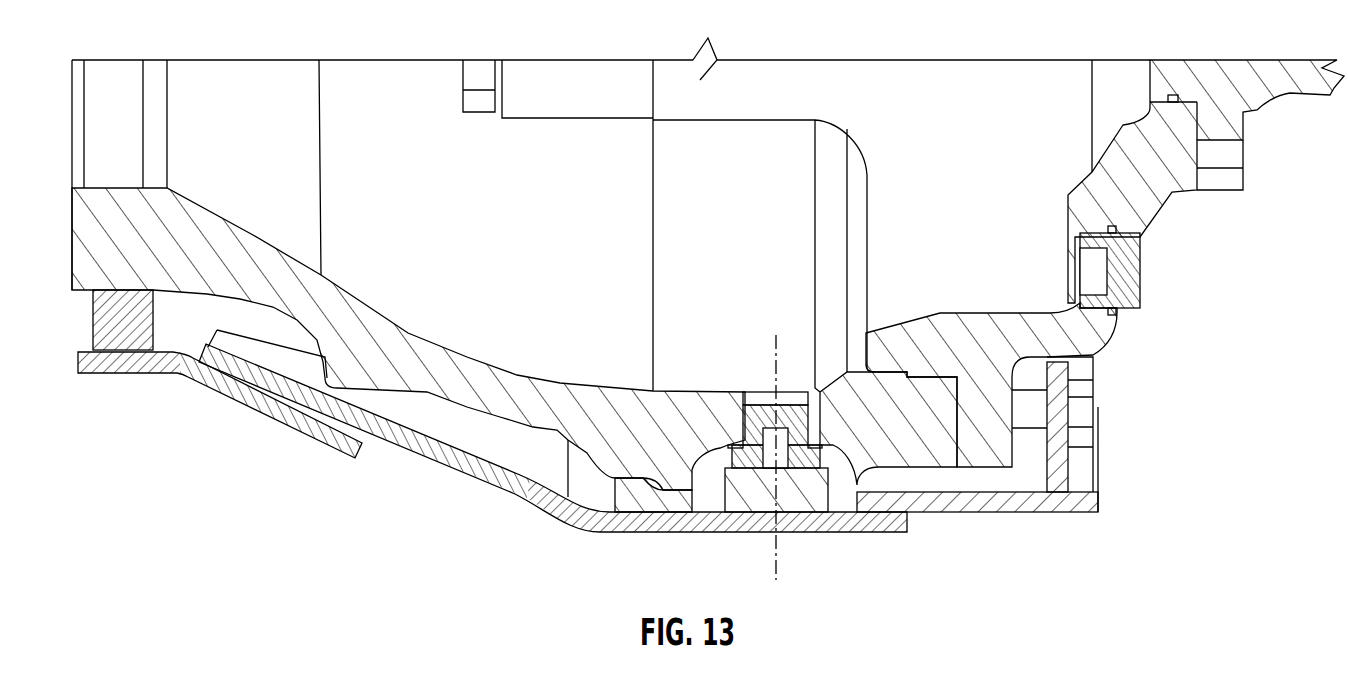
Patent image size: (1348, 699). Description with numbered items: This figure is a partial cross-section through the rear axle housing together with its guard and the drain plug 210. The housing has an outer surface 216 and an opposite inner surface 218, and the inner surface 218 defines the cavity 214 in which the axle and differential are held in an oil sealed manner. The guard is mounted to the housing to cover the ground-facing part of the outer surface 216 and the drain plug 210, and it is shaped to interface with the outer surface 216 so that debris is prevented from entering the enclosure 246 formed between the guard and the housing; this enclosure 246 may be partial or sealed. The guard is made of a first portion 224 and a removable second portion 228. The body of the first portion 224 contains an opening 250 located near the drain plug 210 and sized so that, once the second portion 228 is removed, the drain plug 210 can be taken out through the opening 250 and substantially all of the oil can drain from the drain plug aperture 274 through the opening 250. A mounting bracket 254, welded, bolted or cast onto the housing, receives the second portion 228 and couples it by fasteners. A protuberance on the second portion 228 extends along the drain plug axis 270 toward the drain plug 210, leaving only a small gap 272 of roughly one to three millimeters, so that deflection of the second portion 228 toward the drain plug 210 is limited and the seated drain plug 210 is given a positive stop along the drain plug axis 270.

The drain plug 210 is at (763, 405).
The cavity 214 is at (1040, 85).
The outer surface 216 is at (238, 305).
The inner surface 218 is at (292, 252).
The first portion 224 is at (1072, 513).
The removable second portion 228 is at (473, 484).
The enclosure 246 is at (538, 463).
The opening 250 is at (863, 500).
The mounting bracket 254 is at (105, 332).
The drain plug axis 270 is at (777, 543).
The gap 272 is at (830, 468).
The drain plug aperture 274 is at (739, 433).